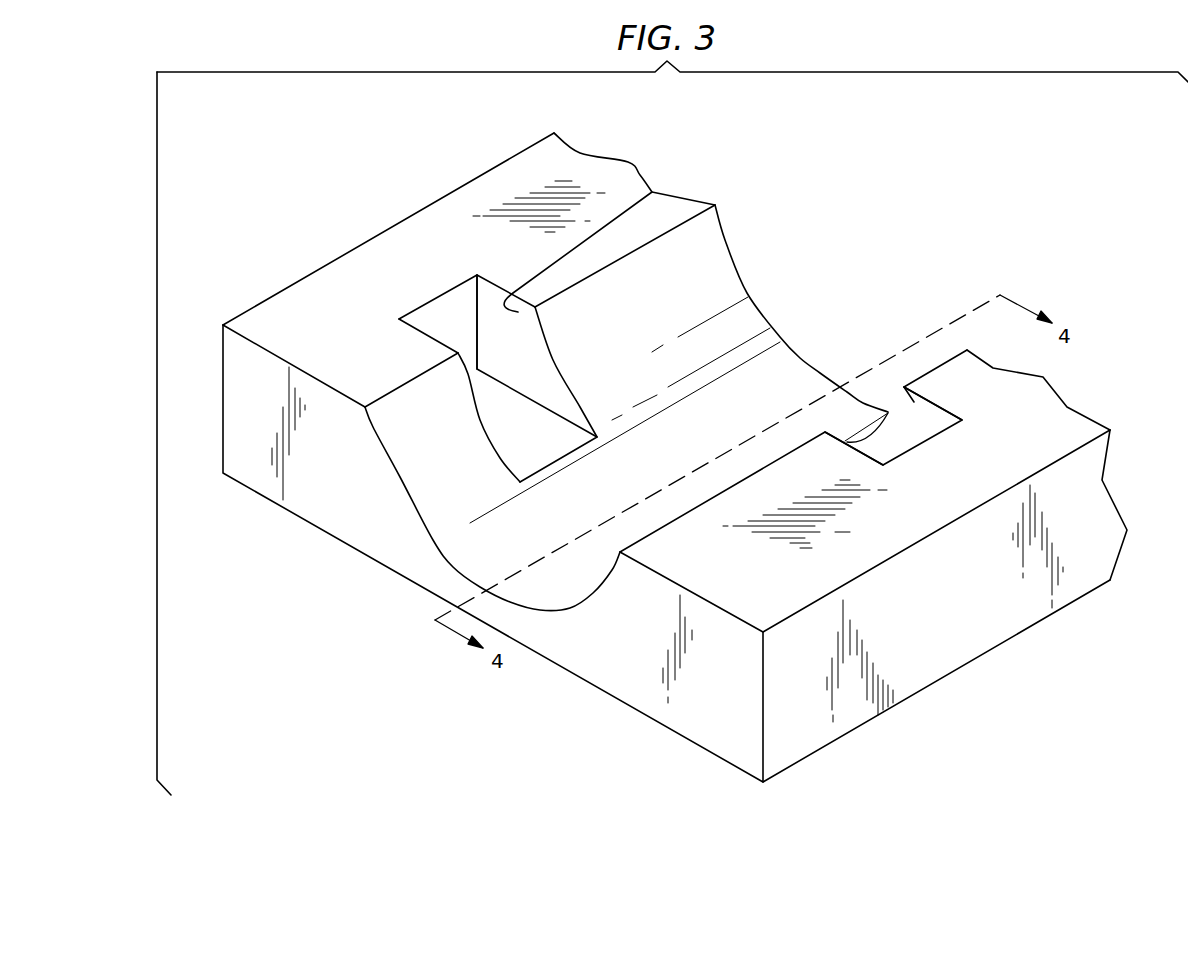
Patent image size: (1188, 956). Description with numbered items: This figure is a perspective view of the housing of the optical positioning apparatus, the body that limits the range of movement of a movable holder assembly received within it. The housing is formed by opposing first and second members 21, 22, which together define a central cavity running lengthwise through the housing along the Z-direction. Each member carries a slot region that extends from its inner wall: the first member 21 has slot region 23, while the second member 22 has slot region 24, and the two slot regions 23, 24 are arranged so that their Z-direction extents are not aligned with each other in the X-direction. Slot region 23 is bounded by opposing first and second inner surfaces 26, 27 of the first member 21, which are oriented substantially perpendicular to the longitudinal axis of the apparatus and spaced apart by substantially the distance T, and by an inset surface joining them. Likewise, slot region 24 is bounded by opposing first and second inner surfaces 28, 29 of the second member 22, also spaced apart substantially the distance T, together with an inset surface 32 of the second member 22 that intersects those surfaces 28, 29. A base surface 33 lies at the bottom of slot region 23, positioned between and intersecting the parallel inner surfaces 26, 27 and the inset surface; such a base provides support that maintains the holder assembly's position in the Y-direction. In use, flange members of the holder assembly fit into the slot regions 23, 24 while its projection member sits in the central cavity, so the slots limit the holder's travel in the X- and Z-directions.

The first member 21 is at (806, 750).
The second member 22 is at (281, 293).
The slot region 23 is at (890, 425).
The slot region 24 is at (453, 318).
The first inner surface 26 is at (840, 440).
The second inner surface 27 is at (912, 400).
The first inner surface 28 is at (428, 370).
The second inner surface 29 is at (652, 192).
The inset surface 32 is at (463, 295).
The base surface 33 is at (552, 450).